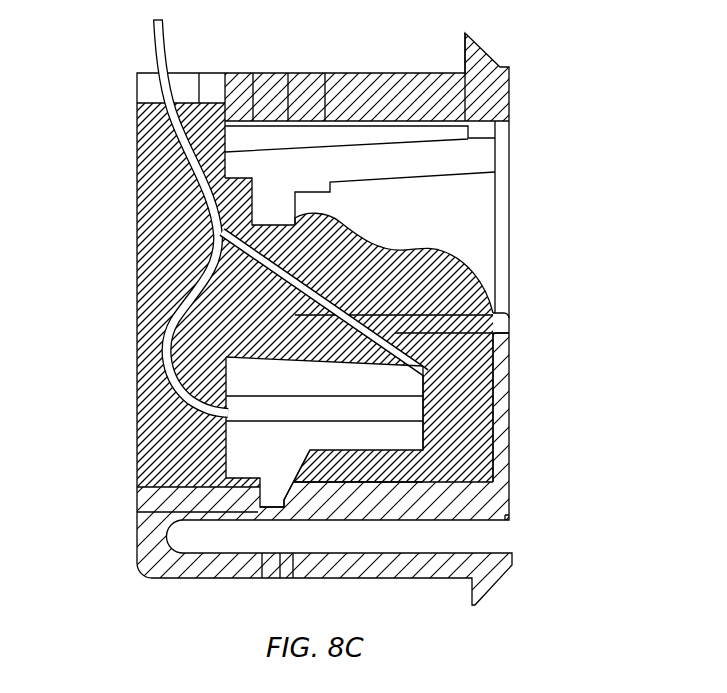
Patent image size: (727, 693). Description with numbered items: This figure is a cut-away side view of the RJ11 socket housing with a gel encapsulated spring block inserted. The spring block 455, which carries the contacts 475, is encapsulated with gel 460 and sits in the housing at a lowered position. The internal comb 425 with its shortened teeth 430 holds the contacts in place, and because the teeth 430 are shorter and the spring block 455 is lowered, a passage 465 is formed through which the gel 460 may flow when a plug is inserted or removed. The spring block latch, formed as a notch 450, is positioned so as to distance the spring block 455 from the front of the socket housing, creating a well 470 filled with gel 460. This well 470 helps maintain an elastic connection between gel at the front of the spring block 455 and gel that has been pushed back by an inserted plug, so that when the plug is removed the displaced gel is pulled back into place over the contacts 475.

The internal comb 425 is at (212, 220).
The teeth 430 is at (238, 243).
The passage 465 is at (250, 320).
The spring block latch notch 450 is at (300, 499).
The spring block 455 is at (407, 433).
The gel 460 is at (432, 266).
The well 470 is at (474, 397).
The contacts 475 is at (478, 308).